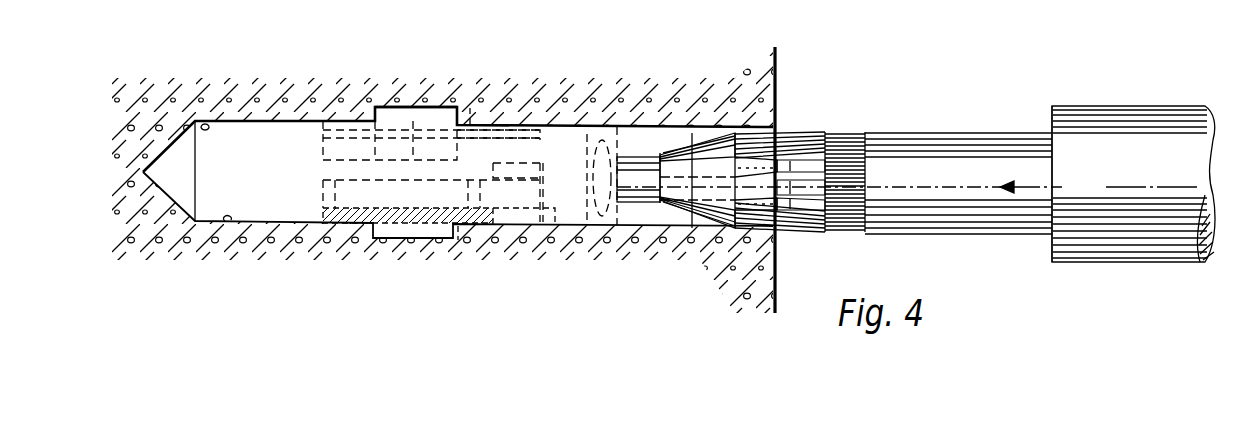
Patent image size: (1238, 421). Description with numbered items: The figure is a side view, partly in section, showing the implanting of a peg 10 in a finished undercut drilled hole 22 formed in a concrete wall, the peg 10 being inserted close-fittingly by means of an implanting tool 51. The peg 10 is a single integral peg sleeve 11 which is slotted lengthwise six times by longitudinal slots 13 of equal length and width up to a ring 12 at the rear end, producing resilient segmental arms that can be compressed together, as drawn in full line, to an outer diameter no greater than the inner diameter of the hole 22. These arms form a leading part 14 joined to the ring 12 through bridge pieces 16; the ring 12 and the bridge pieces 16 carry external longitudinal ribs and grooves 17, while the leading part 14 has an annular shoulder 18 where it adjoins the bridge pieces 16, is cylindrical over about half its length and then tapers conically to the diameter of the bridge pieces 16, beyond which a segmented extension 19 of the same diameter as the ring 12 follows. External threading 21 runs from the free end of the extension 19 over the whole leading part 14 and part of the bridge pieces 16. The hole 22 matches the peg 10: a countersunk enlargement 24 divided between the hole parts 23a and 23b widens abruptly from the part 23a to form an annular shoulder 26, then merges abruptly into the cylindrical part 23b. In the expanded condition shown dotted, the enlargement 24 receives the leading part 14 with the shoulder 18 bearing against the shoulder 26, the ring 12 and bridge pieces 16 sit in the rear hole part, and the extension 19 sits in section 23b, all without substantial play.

The peg 10 is at (708, 236).
The peg sleeve 11 is at (518, 146).
The ring 12 is at (869, 163).
The longitudinal slots 13 is at (816, 202).
The leading part 14 is at (395, 118).
The bridge pieces 16 is at (458, 226).
The spreading jaw 17 is at (847, 165).
The annular shoulder 18 is at (470, 108).
The segmented extension 19 is at (318, 150).
The external threading 21 is at (400, 240).
The undercut drilled hole 22 is at (229, 222).
The hole part 23a is at (595, 126).
The cylindrical hole part 23b is at (207, 119).
The enlargement 24 is at (376, 240).
The annular shoulder 26 is at (455, 106).
The implanting tool 51 is at (939, 124).